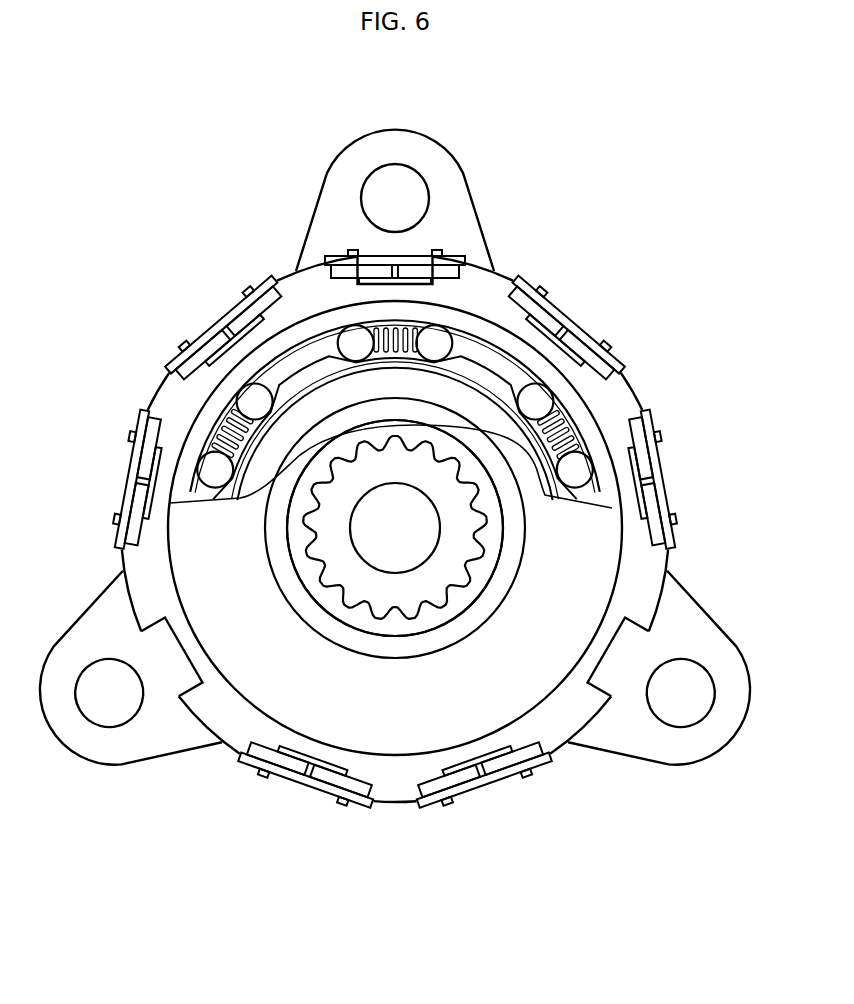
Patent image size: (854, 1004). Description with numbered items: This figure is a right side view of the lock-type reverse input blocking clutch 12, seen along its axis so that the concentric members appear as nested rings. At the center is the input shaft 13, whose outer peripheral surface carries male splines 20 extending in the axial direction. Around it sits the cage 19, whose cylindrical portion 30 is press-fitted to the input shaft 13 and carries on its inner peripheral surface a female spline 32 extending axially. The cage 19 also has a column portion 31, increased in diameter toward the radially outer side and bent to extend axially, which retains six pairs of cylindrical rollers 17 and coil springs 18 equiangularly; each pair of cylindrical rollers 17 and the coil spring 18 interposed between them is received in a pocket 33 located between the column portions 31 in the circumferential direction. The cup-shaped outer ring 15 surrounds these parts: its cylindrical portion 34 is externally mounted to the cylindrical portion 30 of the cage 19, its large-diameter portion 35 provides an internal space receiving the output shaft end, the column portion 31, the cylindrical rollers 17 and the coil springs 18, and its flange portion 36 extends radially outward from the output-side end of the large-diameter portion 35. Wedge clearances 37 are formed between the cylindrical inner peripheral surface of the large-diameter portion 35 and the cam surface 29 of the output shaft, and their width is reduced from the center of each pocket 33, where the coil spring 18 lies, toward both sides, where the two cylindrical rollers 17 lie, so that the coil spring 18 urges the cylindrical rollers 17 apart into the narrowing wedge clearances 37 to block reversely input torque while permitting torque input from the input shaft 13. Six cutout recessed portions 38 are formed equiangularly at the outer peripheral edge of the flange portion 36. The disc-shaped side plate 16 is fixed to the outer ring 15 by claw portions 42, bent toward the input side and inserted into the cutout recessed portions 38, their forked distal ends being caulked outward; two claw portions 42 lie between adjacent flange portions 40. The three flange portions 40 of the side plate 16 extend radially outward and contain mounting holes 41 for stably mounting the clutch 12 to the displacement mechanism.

The reverse input blocking clutch 12 is at (146, 307).
The input shaft 13 is at (368, 612).
The outer ring 15 is at (387, 803).
The side plate 16 is at (476, 205).
The cylindrical rollers 17 is at (352, 340).
The coil springs 18 is at (390, 327).
The cage 19 is at (319, 609).
The male splines 20 is at (423, 610).
The cam surface 29 is at (372, 357).
The cylindrical portion 30 is at (472, 596).
The column portion 31 is at (282, 365).
The female spline 32 is at (315, 553).
The pocket 33 is at (654, 470).
The cylindrical portion 34 is at (428, 646).
The large-diameter portion 35 is at (548, 668).
The flange portion 36 is at (205, 712).
The wedge clearances 37 is at (370, 325).
The cutout recessed portions 38 is at (553, 324).
The flange portions 40 is at (437, 160).
The mounting holes 41 is at (380, 190).
The claw portions 42 is at (540, 292).